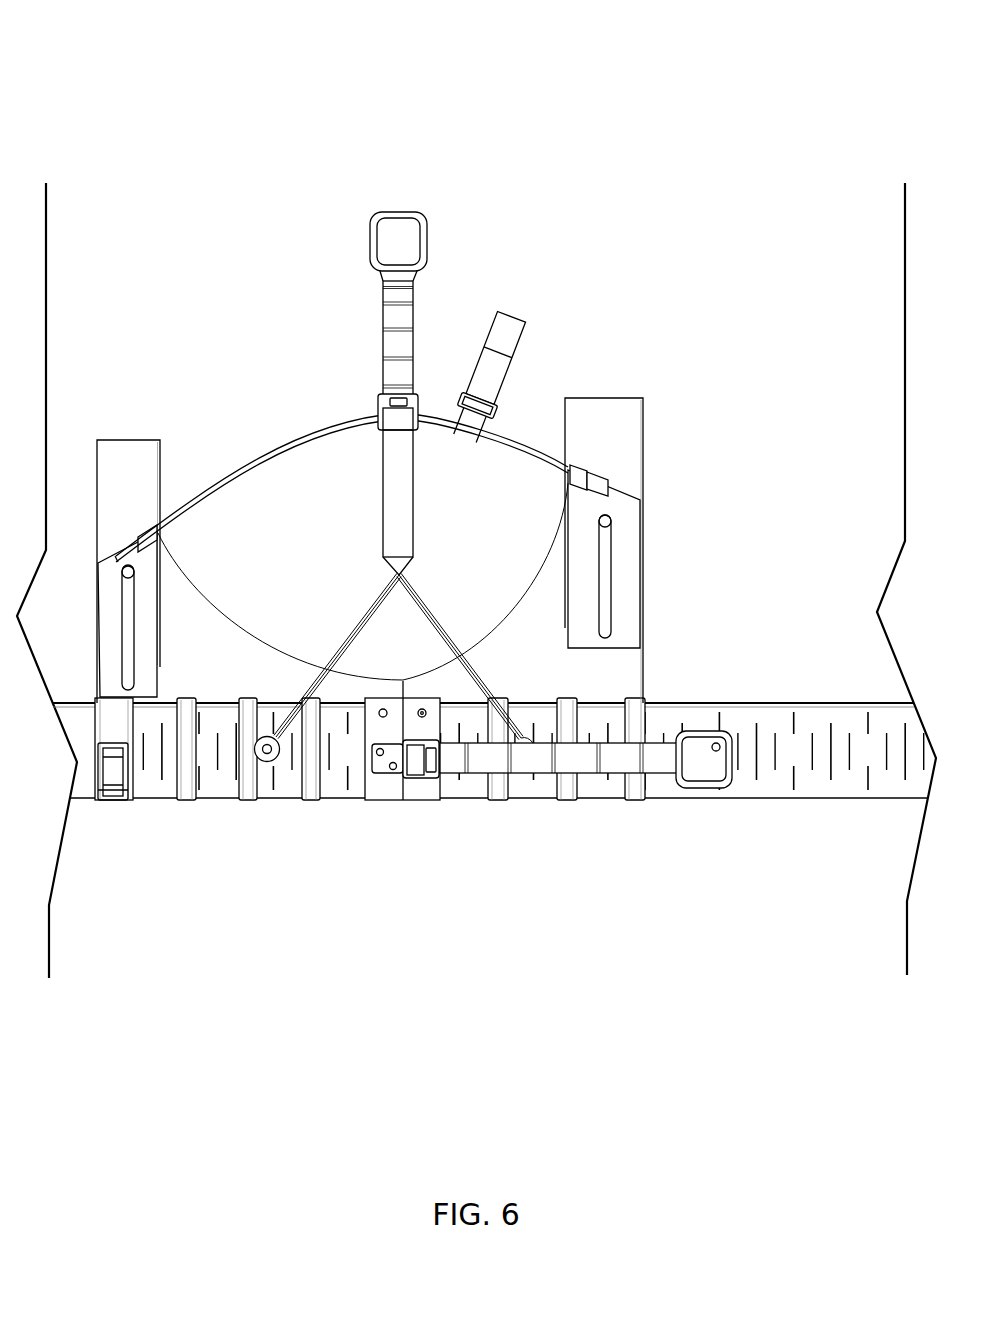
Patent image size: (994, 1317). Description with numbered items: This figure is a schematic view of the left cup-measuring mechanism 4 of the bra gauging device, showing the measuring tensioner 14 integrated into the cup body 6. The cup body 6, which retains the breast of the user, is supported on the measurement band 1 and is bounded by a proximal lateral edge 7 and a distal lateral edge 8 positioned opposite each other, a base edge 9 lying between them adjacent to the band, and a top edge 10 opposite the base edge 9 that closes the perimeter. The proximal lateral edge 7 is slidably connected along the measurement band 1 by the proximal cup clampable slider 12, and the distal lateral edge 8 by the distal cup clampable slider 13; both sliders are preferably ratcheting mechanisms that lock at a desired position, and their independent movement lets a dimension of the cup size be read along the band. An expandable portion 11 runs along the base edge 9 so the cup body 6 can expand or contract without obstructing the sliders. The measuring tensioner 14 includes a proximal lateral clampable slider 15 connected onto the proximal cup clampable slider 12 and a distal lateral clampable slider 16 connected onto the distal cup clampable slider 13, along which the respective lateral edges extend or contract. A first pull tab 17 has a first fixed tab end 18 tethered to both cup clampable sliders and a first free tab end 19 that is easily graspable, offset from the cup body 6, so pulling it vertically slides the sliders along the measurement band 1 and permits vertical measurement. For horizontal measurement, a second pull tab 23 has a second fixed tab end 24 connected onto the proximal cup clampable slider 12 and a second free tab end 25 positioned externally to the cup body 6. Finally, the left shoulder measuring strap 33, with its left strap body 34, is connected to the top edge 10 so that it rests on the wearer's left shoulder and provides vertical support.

The measurement band 1 is at (828, 789).
The left cup-measuring mechanism 4 is at (374, 384).
The cup body 6 is at (342, 461).
The proximal lateral edge 7 is at (101, 533).
The distal lateral edge 8 is at (636, 512).
The base edge 9 is at (268, 818).
The top edge 10 is at (313, 426).
The expandable portion 11 is at (364, 640).
The proximal cup clampable slider 12 is at (188, 801).
The distal cup clampable slider 13 is at (638, 799).
The measuring tensioner 14 is at (394, 432).
The proximal lateral clampable slider 15 is at (110, 526).
The distal lateral clampable slider 16 is at (637, 452).
The first pull tab 17 is at (410, 464).
The first fixed tab end 18 is at (393, 557).
The first free tab end 19 is at (386, 255).
The second pull tab 23 is at (525, 770).
The second fixed tab end 24 is at (375, 780).
The second free tab end 25 is at (723, 791).
The left shoulder measuring strap 33 is at (508, 288).
The left strap body 34 is at (517, 332).